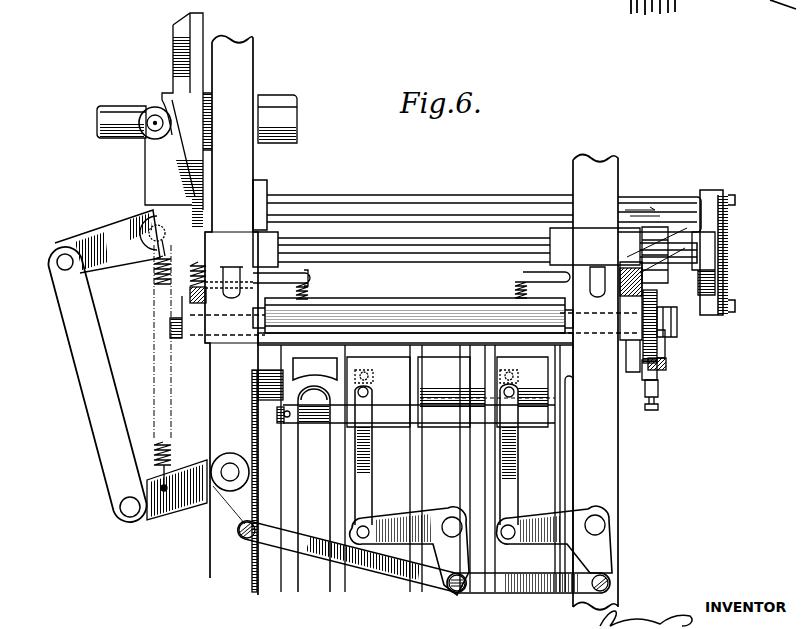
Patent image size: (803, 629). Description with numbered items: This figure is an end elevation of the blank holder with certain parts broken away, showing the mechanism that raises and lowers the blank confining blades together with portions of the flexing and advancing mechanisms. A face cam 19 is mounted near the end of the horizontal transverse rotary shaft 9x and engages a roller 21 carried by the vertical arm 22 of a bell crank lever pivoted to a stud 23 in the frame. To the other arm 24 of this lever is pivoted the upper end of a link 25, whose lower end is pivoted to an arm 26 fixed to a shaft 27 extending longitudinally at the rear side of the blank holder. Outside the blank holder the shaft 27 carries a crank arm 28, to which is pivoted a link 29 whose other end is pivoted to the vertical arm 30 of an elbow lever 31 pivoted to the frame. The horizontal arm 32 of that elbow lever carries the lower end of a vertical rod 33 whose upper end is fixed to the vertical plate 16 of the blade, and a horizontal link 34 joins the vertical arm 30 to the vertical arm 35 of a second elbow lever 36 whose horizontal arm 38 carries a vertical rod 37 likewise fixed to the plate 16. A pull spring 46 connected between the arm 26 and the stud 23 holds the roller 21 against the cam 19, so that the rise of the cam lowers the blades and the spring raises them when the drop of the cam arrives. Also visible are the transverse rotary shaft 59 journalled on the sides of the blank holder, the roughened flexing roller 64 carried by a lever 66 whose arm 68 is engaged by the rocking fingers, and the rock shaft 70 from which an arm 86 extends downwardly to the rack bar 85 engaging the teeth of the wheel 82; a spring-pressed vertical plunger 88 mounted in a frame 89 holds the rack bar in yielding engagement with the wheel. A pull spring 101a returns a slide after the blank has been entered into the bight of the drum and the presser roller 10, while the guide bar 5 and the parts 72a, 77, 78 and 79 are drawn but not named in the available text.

The guide bar 5 is at (315, 475).
The horizontal transverse rotary shaft 9x is at (283, 107).
The presser roller 10 is at (713, 8).
The vertical plate 16 is at (258, 384).
The face cam 19 is at (200, 33).
The roller 21 is at (152, 108).
The vertical arm 22 is at (145, 160).
The pivot stud 23 is at (148, 238).
The arm 24 is at (107, 230).
The link 25 is at (95, 319).
The arm 26 is at (181, 470).
The shaft 27 is at (231, 462).
The crank arm 28 is at (235, 509).
The link 29 is at (317, 557).
The vertical arm 30 is at (455, 571).
The elbow lever 31 is at (434, 513).
The horizontal arm 32 is at (377, 524).
The vertical rod 33 is at (371, 456).
The horizontal link 34 is at (515, 593).
The vertical arm 35 is at (605, 558).
The second elbow lever 36 is at (589, 516).
The vertical rod 37 is at (515, 488).
The horizontal arm 38 is at (520, 528).
The pull spring 46 is at (154, 272).
The transverse rotary shaft 59 is at (388, 205).
The roller 64 is at (376, 305).
The lever 66 is at (181, 302).
The arm 68 is at (207, 297).
The rock shaft 70 is at (368, 254).
The spring 72a is at (199, 270).
The block 77 is at (700, 278).
The gear 78 is at (727, 238).
The shaft end 79 is at (702, 202).
The wheel 82 is at (660, 316).
The rack bar 85 is at (645, 352).
The arm 86 is at (668, 342).
The vertical plunger 88 is at (662, 370).
The frame 89 is at (659, 386).
The pull spring 101a is at (312, 293).